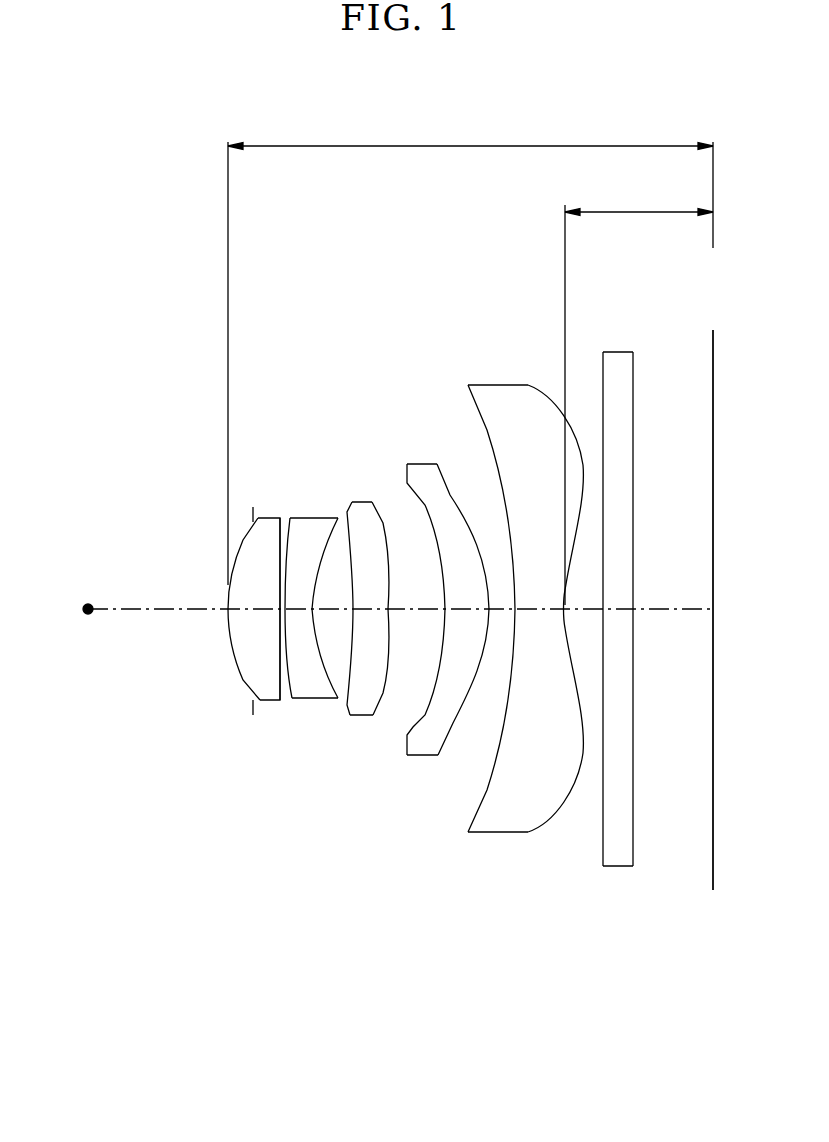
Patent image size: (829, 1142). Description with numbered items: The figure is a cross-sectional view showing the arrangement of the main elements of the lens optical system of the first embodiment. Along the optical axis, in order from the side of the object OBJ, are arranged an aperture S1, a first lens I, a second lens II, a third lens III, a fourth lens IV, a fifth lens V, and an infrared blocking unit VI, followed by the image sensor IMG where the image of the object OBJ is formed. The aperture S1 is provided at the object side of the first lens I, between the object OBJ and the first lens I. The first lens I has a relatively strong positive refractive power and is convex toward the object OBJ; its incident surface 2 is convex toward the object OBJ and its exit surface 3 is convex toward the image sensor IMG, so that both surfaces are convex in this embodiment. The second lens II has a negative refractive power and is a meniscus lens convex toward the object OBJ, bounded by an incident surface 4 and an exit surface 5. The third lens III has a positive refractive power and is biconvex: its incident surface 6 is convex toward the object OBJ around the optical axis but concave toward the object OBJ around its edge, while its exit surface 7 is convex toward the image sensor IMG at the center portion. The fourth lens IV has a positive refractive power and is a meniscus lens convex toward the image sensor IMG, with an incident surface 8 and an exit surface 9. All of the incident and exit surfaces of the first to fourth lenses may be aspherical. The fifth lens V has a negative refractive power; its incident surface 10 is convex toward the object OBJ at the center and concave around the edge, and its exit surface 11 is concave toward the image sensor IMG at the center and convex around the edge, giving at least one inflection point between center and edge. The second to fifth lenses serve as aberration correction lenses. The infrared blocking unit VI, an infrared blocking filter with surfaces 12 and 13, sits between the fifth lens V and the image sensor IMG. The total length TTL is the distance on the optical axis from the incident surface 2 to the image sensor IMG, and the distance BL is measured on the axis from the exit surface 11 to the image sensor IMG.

The object OBJ is at (88, 600).
The total length of the lens optical system TTL is at (470, 504).
The distance from the exit surface of the fifth lens to the image sensor BL is at (639, 395).
The image sensor IMG is at (712, 350).
The aperture S1 is at (252, 513).
The first lens I is at (229, 620).
The second lens II is at (310, 623).
The third lens III is at (368, 620).
The fourth lens IV is at (445, 622).
The fifth lens V is at (525, 598).
The infrared blocking unit VI is at (631, 617).
The incident surface of the first lens 2 is at (245, 541).
The exit surface of the first lens 3 is at (283, 520).
The incident surface of the second lens 4 is at (291, 535).
The exit surface of the second lens 5 is at (323, 530).
The incident surface of the third lens 6 is at (350, 527).
The exit surface of the third lens 7 is at (384, 527).
The incident surface of the fourth lens 8 is at (425, 507).
The exit surface of the fourth lens 9 is at (451, 494).
The incident surface of the fifth lens 10 is at (488, 428).
The exit surface of the fifth lens 11 is at (547, 395).
The incident surface of the infrared blocking unit 12 is at (603, 390).
The exit surface of the infrared blocking unit 13 is at (633, 390).